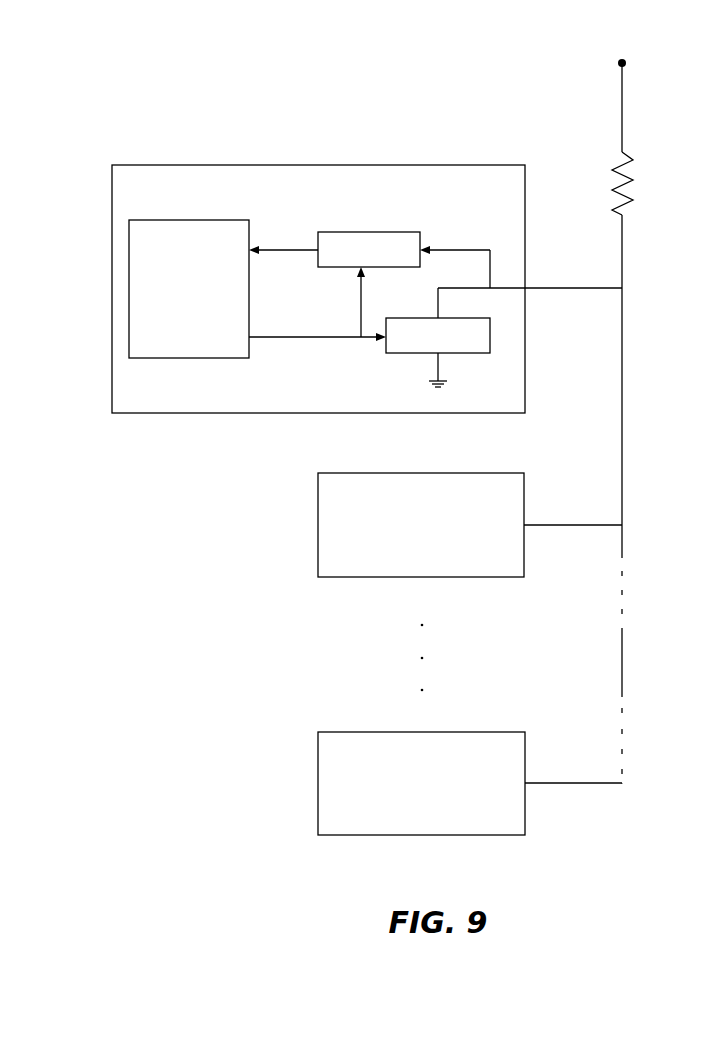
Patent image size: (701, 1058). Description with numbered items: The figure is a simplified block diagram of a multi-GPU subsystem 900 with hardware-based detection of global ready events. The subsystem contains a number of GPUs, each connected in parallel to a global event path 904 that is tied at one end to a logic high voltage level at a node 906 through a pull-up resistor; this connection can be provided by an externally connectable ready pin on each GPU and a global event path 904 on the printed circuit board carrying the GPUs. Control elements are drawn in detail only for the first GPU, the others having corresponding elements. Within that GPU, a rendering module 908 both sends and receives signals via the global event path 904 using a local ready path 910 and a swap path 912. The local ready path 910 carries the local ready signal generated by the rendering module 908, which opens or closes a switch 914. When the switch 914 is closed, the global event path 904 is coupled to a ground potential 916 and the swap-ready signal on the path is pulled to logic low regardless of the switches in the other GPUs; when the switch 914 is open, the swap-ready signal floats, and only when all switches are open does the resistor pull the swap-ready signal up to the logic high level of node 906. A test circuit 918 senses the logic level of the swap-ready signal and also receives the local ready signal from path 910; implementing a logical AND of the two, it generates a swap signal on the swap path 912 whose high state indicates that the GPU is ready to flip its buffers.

The multi-GPU subsystem 900 is at (293, 104).
The global event path 904 is at (625, 250).
The node 906 is at (618, 62).
The rendering module 908 is at (147, 226).
The local ready path 910 is at (313, 310).
The swap path 912 is at (278, 252).
The switch 914 is at (395, 344).
The ground potential 916 is at (440, 373).
The test circuit 918 is at (335, 238).